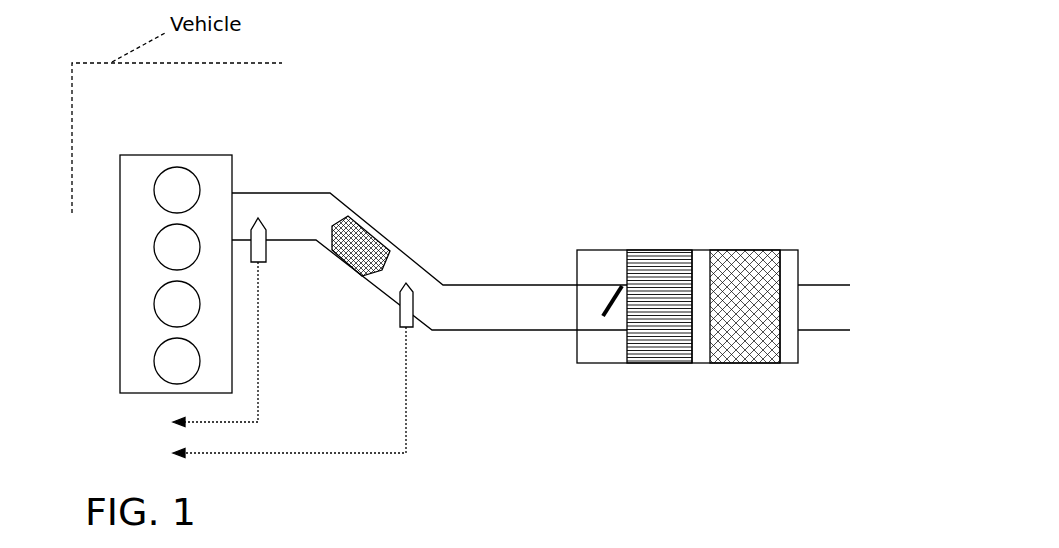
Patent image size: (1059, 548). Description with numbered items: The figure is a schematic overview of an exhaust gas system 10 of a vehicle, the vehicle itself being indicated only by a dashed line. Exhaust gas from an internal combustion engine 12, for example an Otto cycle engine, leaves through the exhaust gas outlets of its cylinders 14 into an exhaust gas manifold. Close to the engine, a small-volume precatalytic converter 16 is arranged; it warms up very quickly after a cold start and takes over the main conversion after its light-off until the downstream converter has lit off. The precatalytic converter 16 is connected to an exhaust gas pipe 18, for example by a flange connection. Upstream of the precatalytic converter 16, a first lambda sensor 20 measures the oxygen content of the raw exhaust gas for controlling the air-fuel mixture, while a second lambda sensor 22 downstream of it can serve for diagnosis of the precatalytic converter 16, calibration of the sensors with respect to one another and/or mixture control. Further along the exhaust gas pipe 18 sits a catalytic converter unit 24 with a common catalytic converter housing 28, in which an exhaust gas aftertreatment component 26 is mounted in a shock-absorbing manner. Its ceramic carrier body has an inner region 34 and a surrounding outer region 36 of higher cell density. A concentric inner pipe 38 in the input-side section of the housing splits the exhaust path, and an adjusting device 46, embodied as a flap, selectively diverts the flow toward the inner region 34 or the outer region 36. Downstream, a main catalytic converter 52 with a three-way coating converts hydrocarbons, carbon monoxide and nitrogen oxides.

The exhaust gas system 10 is at (554, 126).
The internal combustion engine 12 is at (149, 244).
The cylinders 14 is at (168, 252).
The precatalytic converter 16 is at (355, 238).
The exhaust gas pipe 18 is at (410, 267).
The first lambda sensor 20 is at (263, 258).
The second lambda sensor 22 is at (402, 320).
The catalytic converter unit 24 is at (729, 274).
The exhaust gas aftertreatment component 26 is at (702, 387).
The catalytic converter housing 28 is at (790, 357).
The inner region 34 is at (638, 317).
The outer region 36 is at (660, 340).
The inner pipe 38 is at (613, 325).
The adjusting device 46 is at (608, 301).
The main catalytic converter 52 is at (755, 260).